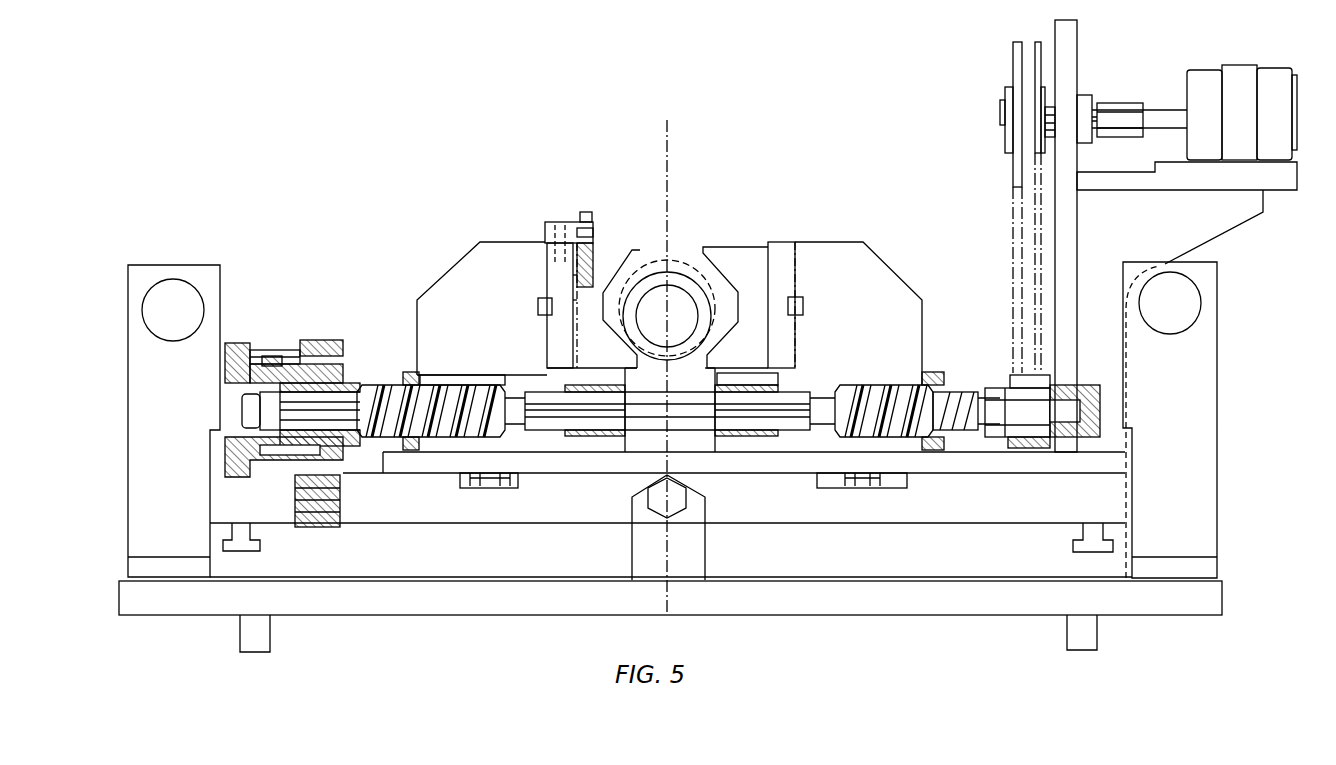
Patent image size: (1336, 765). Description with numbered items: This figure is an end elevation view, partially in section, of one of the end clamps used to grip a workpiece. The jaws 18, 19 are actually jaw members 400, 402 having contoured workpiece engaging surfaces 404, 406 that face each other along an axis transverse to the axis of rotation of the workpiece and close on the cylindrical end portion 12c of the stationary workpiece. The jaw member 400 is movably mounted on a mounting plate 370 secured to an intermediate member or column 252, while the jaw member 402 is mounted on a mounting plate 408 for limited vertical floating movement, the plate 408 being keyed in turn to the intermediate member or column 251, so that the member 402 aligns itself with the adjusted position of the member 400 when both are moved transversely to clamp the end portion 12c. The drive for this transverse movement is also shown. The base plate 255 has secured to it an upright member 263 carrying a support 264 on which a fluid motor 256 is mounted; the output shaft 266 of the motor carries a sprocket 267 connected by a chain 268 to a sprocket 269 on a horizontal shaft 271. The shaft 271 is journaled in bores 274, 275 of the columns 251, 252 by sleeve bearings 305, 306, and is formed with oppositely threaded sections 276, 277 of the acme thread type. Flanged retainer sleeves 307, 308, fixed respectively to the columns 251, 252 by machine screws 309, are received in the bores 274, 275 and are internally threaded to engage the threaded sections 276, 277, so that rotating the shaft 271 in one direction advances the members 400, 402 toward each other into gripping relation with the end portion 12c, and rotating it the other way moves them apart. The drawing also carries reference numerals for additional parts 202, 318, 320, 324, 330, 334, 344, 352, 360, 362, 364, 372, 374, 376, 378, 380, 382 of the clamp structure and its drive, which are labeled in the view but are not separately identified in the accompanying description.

The cylindrical end portion 12c is at (752, 408).
The jaw 18 is at (644, 362).
The jaw 19 is at (696, 368).
The base frame 202 is at (671, 550).
The intermediate member or column 251 is at (858, 313).
The intermediate member or column 252 is at (527, 308).
The base plate 255 is at (734, 526).
The fluid motor 256 is at (1205, 75).
The upright member 263 is at (1073, 241).
The support 264 is at (1243, 178).
The output shaft 266 is at (1003, 116).
The sprocket 267 is at (1012, 60).
The chain 268 is at (1012, 176).
The sprocket 269 is at (1003, 446).
The horizontal shaft 271 is at (711, 410).
The bore 274 is at (808, 392).
The bore 275 is at (535, 393).
The threaded section 276 is at (875, 385).
The threaded section 277 is at (487, 384).
The sleeve bearing 305 is at (751, 396).
The sleeve bearing 306 is at (615, 396).
The flanged retainer sleeve 307 is at (897, 385).
The flanged retainer sleeve 308 is at (471, 385).
The machine screws 309 is at (411, 371).
The gear shaft 318 is at (285, 352).
The gear body 320 is at (312, 370).
The gear 324 is at (338, 467).
The gear housing 330 is at (333, 342).
The bolt 334 is at (245, 407).
The lower housing 344 is at (218, 458).
The key 352 is at (272, 350).
The center line 360 is at (667, 140).
The coupling 362 is at (1070, 388).
The bearing block 364 is at (1097, 390).
The mounting plate 370 is at (553, 350).
The slot 372 is at (577, 300).
The block 374 is at (538, 308).
The bolt 376 is at (596, 251).
The thread 378 is at (575, 275).
The clamp 380 is at (600, 185).
The bolt stub 382 is at (596, 232).
The jaw member 400 is at (647, 262).
The jaw member 402 is at (717, 252).
The contoured workpiece engaging surface 404 is at (647, 270).
The contoured workpiece engaging surface 406 is at (732, 283).
The mounting plate 408 is at (778, 247).